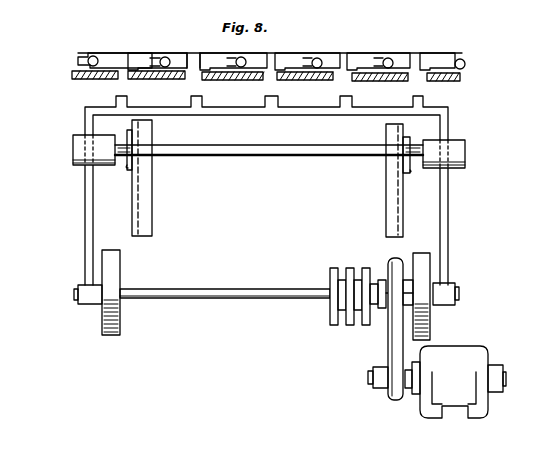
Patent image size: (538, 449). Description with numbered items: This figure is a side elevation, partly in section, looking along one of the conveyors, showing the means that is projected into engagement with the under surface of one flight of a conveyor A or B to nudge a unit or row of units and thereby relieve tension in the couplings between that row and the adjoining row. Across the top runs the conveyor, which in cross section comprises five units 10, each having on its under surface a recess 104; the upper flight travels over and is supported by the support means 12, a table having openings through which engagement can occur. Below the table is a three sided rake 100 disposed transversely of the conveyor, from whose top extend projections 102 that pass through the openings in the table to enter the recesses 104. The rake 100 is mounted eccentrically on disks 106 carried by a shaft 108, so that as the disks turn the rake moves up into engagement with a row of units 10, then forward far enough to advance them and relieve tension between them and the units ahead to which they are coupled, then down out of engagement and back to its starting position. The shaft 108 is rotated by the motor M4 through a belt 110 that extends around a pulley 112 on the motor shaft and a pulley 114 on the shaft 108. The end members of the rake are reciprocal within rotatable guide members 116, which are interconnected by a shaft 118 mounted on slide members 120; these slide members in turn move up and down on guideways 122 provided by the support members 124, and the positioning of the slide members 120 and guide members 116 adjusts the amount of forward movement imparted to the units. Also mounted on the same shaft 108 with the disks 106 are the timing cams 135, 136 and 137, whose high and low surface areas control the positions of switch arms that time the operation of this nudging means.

The conveyor B is at (435, 62).
The recess 104 is at (118, 68).
The support means 12 is at (213, 80).
The unit 10 is at (185, 46).
The projection 102 is at (116, 102).
The three sided rake 100 is at (72, 215).
The rotatable guide member 116 is at (73, 152).
The support member 124 is at (152, 197).
The slide member 120 is at (128, 168).
The guideway 122 is at (128, 210).
The shaft 118 is at (282, 157).
The disk 106 is at (122, 256).
The shaft 108 is at (196, 300).
The timing cam 137 is at (330, 270).
The timing cam 136 is at (347, 268).
The timing cam 135 is at (366, 268).
The pulley 114 is at (387, 315).
The belt 110 is at (387, 348).
The pulley 112 is at (387, 394).
The motor M4 is at (470, 346).
The conveyor A is at (105, 448).